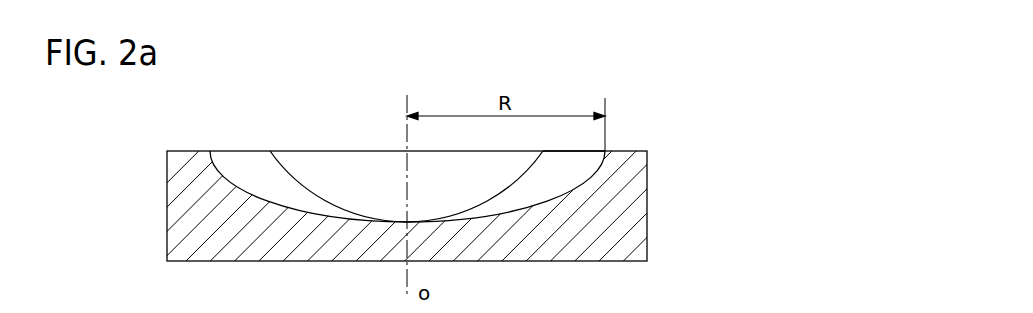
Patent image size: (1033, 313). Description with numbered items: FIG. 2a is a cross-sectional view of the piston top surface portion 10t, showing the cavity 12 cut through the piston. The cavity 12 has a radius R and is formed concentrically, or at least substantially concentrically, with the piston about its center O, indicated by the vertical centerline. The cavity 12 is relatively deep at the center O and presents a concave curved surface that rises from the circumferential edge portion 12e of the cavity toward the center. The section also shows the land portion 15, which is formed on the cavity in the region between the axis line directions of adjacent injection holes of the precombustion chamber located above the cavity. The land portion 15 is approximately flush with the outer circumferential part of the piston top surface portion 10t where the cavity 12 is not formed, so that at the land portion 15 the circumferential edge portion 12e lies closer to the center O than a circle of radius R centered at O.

The piston top surface portion 10t is at (647, 212).
The cavity 12 is at (264, 194).
The circumferential edge portion 12e is at (210, 150).
The land portion 15 is at (570, 151).